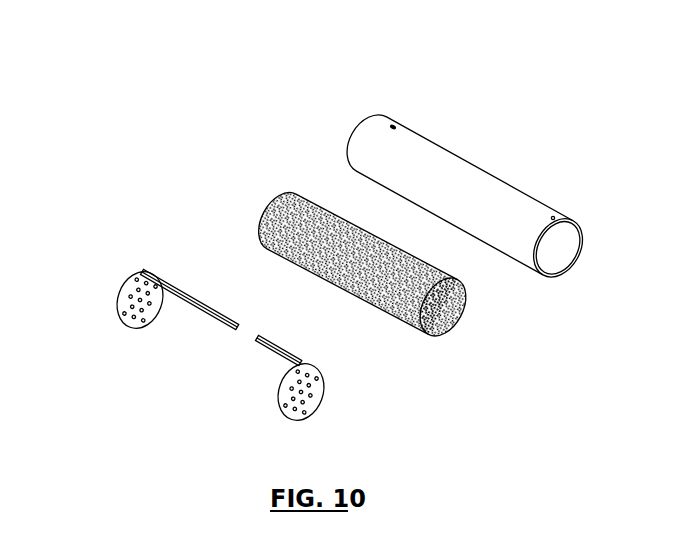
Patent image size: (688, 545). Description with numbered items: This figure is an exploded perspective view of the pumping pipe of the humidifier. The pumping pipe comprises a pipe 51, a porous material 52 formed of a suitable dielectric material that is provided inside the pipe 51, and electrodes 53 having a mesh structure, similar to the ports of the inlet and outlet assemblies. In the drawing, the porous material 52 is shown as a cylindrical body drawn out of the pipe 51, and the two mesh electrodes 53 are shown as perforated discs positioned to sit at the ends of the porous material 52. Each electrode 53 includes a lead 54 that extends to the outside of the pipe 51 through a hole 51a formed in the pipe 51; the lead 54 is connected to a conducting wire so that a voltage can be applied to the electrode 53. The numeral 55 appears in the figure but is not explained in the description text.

The pipe 51 is at (487, 170).
The hole 51a is at (392, 124).
The porous material 52 is at (285, 200).
The electrode 53 is at (127, 293).
The lead 54 is at (197, 293).
The perforations 55 is at (143, 323).